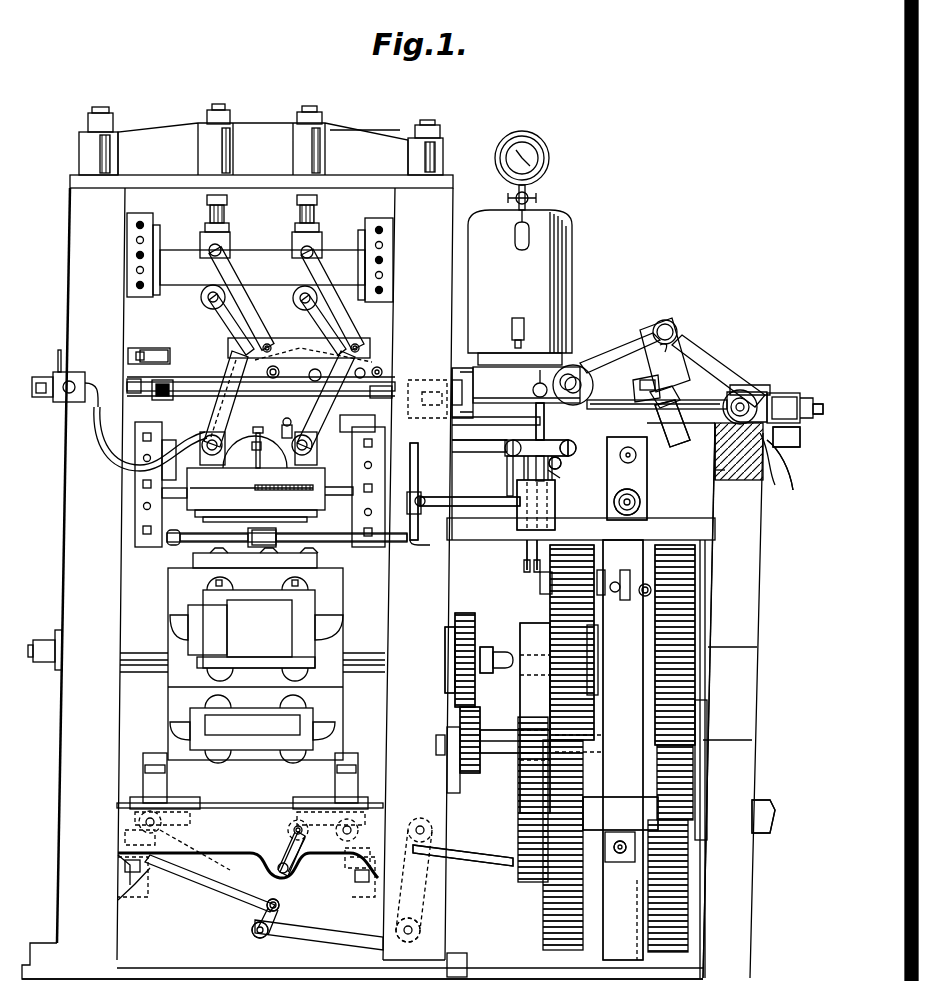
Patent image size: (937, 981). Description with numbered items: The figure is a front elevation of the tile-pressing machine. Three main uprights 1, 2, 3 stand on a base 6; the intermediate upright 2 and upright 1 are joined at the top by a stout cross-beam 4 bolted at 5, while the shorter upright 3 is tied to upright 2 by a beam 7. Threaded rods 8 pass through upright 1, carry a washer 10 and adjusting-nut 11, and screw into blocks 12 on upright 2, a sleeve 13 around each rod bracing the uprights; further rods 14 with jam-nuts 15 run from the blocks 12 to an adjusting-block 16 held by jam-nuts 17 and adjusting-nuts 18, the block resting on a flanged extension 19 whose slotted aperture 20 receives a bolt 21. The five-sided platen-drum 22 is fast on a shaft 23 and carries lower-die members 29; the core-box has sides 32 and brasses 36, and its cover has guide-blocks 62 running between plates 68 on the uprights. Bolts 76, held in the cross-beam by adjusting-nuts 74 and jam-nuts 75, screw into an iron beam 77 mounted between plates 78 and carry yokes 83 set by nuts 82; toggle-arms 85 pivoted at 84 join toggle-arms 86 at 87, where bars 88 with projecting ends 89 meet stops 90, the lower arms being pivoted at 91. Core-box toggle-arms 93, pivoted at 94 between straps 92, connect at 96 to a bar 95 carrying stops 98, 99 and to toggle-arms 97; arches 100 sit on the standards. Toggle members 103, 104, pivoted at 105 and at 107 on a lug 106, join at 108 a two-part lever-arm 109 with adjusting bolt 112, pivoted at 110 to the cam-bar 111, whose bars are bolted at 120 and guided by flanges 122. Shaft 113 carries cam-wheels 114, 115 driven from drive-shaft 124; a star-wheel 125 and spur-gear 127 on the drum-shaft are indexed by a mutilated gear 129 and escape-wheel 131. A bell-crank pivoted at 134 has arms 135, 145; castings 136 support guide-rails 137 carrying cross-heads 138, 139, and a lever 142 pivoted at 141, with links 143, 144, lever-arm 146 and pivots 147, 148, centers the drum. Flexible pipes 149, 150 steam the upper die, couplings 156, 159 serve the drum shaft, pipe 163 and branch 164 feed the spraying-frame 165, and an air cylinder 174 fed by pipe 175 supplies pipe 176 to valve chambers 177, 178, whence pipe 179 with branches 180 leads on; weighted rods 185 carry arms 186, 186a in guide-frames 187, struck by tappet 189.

The upright 1 is at (81, 550).
The intermediate upright 2 is at (271, 120).
The upright 3 is at (720, 704).
The cross-beam 4 is at (365, 148).
The bolts 5 is at (103, 113).
The base 6 is at (412, 974).
The beam 7 is at (745, 378).
The rods 8 is at (165, 383).
The washer 10 is at (58, 372).
The adjusting-nut 11 is at (60, 402).
The block 12 is at (479, 431).
The sleeve 13 is at (127, 380).
The rods 14 is at (655, 440).
The jam-nuts 15 is at (462, 386).
The adjusting-block 16 is at (785, 393).
The jam-nuts 17 is at (765, 380).
The adjusting-nuts 18 is at (800, 425).
The flanged extension 19 is at (795, 445).
The slotted aperture 20 is at (767, 500).
The bolt 21 is at (793, 490).
The platen-drum 22 is at (343, 600).
The shaft 23 is at (140, 640).
The lower-die member 29 is at (193, 560).
The sides 32 is at (257, 493).
The brasses 36 is at (185, 495).
The guide-block 62 is at (155, 478).
The flanges or plates 68 is at (135, 510).
The adjusting-nuts 74 is at (265, 112).
The jam-nuts 75 is at (207, 210).
The bolts 76 is at (320, 213).
The iron beam 77 is at (262, 266).
The flanges or plates 78 is at (127, 236).
The nuts 82 is at (228, 228).
The yoke 83 is at (300, 252).
The pivot 84 is at (205, 254).
The toggle-arm 85 is at (262, 297).
The toggle-arm 86 is at (279, 400).
The pivotal connection 87 is at (400, 325).
The bars 88 is at (297, 349).
The projecting ends 89 is at (220, 360).
The stops 90 is at (160, 347).
The pivots 91 is at (312, 445).
The straps 92 is at (305, 290).
The toggle-arms 93 is at (215, 310).
The pivotal connection 94 is at (305, 298).
The bar 95 is at (430, 380).
The pivots 96 is at (380, 372).
The toggle-arms 97 is at (220, 428).
The stop 98 is at (339, 350).
The stop 99 is at (385, 370).
The arches 100 is at (269, 446).
The toggle-lever member 103 is at (608, 350).
The toggle-lever member 104 is at (700, 355).
The pivot 105 is at (597, 385).
The lug 106 is at (715, 468).
The pivot 107 is at (735, 405).
The pivot 108 is at (667, 322).
The lever-arm 109 is at (688, 338).
The pivot 110 is at (610, 440).
The cam-bar 111 is at (623, 750).
The bolt 112 is at (666, 389).
The shaft 113 is at (503, 770).
The cam-wheel 114 is at (558, 642).
The cam-wheel 115 is at (685, 640).
The bolts 120 is at (640, 502).
The annular flanges 122 is at (650, 740).
The drive-shaft 124 is at (775, 808).
The star-wheel 125 is at (462, 613).
The spur-gear 127 is at (478, 628).
The mutilated gear 129 is at (480, 723).
The escape-wheel 131 is at (445, 740).
The pivot 134 is at (455, 890).
The arm 135 is at (478, 845).
The castings 136 is at (130, 885).
The guide-rails 137 is at (250, 818).
The cross-head 138 is at (165, 790).
The cross-head 139 is at (340, 785).
The pivot 141 is at (290, 872).
The lever 142 is at (300, 905).
The link 143 is at (315, 825).
The link 144 is at (319, 934).
The arm 145 is at (420, 925).
The lever-arm 146 is at (222, 880).
The pivot 147 is at (255, 935).
The pivot 148 is at (268, 908).
The flexible pipe 149 is at (110, 458).
The flexible pipe 150 is at (288, 422).
The coupling 156 is at (45, 638).
The coupling 159 is at (490, 648).
The pipe 163 is at (418, 455).
The branch pipe 164 is at (335, 528).
The spraying-frame 165 is at (215, 527).
The compressed-air cylinder 174 is at (573, 275).
The pipe 175 is at (510, 330).
The pipe 176 is at (536, 436).
The air-valve chamber 177 is at (510, 458).
The air-valve chamber 178 is at (565, 455).
The pipe 179 is at (512, 494).
The branches 180 is at (465, 507).
The weighted rod 185 is at (565, 475).
The depending arm 186 is at (537, 560).
The depending arm 186a is at (527, 555).
The guide-frame 187 is at (555, 508).
The tappet 189 is at (540, 583).